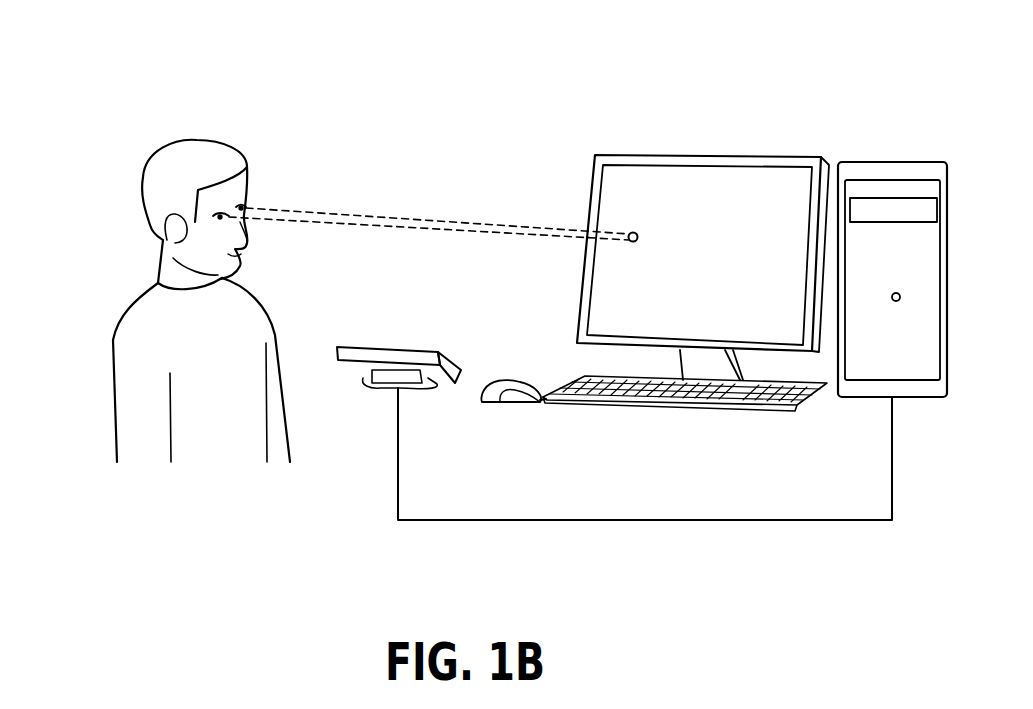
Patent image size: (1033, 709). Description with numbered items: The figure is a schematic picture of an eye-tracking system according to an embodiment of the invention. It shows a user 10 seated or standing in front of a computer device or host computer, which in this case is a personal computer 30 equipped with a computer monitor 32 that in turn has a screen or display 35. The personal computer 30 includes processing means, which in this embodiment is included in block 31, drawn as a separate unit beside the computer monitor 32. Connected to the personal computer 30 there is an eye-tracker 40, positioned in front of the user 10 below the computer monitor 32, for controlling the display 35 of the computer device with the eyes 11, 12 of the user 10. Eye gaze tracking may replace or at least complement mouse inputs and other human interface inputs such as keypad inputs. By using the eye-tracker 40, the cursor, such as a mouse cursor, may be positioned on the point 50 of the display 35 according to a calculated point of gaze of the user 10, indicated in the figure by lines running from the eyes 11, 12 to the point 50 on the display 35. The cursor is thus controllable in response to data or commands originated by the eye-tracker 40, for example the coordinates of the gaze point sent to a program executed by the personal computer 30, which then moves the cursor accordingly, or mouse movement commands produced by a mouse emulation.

The user 10 is at (150, 232).
The eye 11 is at (218, 217).
The eye 12 is at (242, 206).
The personal computer 30 is at (672, 273).
The block containing processing means 31 is at (900, 161).
The computer monitor 32 is at (703, 216).
The display 35 is at (746, 193).
The eye-tracker 40 is at (362, 357).
The point of the display 50 is at (630, 233).